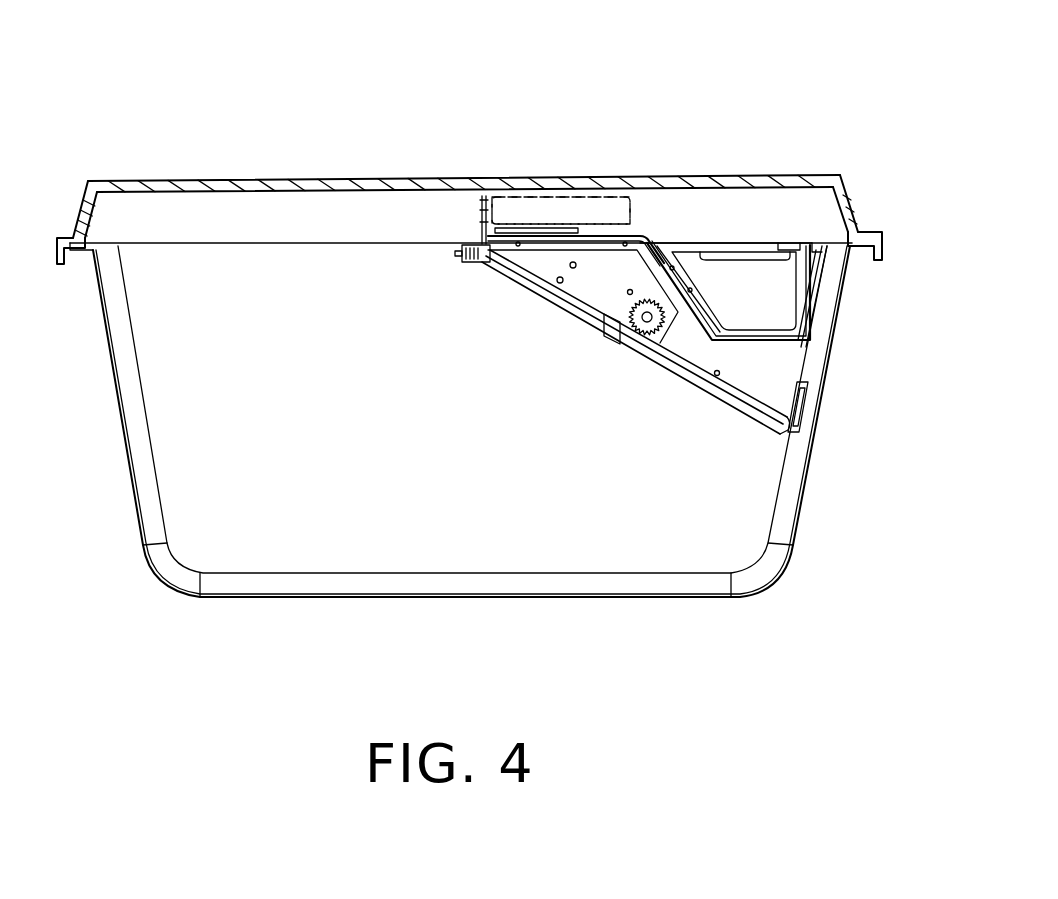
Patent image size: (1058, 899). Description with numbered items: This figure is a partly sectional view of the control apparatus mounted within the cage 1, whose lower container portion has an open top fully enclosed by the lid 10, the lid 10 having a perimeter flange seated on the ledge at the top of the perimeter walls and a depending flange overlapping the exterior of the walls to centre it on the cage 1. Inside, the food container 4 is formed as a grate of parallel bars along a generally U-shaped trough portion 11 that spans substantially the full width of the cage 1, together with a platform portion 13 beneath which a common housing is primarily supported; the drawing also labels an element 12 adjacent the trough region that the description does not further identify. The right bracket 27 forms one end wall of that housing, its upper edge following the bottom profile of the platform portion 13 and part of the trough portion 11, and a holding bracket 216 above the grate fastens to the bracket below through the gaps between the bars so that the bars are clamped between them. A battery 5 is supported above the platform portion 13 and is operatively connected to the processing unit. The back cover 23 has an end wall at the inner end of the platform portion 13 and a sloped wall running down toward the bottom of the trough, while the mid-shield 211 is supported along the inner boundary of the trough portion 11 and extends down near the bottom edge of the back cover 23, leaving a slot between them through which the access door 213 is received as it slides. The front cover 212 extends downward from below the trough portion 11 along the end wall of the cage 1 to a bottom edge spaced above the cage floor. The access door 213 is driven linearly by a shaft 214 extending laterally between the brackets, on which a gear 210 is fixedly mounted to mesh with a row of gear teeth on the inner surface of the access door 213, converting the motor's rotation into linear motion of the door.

The cage 1 is at (808, 510).
The food container 4 is at (816, 312).
The battery 5 is at (513, 199).
The lid 10 is at (336, 179).
The trough portion 11 is at (822, 285).
The tray 12 is at (791, 243).
The platform portion 13 is at (597, 205).
The back cover 23 is at (652, 268).
The right bracket 27 is at (607, 300).
The gear 210 is at (633, 315).
The mid-shield 211 is at (617, 282).
The front cover 212 is at (806, 402).
The access door 213 is at (681, 357).
The shaft 214 is at (647, 323).
The holding bracket 216 is at (678, 240).